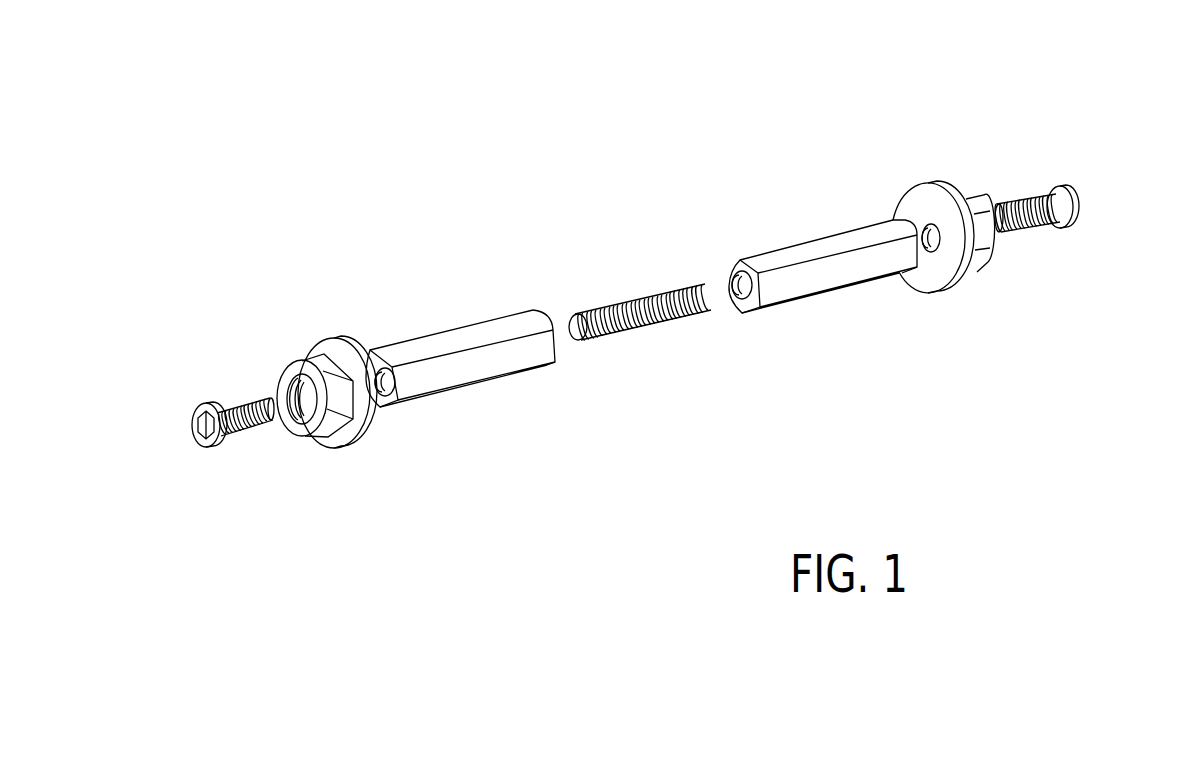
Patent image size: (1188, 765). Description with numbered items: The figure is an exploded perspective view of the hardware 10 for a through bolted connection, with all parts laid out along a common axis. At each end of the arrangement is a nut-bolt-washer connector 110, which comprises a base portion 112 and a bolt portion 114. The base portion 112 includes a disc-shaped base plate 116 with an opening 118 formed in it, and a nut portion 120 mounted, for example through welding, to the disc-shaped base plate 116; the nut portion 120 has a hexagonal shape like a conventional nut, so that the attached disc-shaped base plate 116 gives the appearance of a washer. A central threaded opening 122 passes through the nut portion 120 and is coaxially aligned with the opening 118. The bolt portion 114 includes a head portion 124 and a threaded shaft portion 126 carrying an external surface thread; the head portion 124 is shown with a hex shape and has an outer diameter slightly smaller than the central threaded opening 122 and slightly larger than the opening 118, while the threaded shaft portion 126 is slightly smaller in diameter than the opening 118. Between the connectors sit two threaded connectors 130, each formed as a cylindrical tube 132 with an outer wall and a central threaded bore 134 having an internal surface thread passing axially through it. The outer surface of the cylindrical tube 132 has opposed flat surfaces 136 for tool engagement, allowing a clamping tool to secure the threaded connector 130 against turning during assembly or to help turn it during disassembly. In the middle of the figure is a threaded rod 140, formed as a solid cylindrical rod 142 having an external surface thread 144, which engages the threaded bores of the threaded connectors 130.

The hardware 10 is at (734, 164).
The nut-bolt-washer connector 110 is at (357, 480).
The base portion 112 is at (342, 352).
The bolt portion 114 is at (213, 397).
The disc-shaped base plate 116 is at (913, 187).
The opening 118 is at (931, 262).
The nut portion 120 is at (327, 441).
The central threaded opening 122 is at (290, 433).
The head portion 124 is at (208, 449).
The threaded shaft portion 126 is at (247, 397).
The threaded connector 130 is at (442, 305).
The cylindrical tube 132 is at (440, 381).
The central threaded bore 134 is at (722, 265).
The opposed flat surfaces 136 is at (527, 342).
The threaded rod 140 is at (673, 378).
The solid cylindrical rod 142 is at (579, 315).
The external surface thread 144 is at (615, 339).